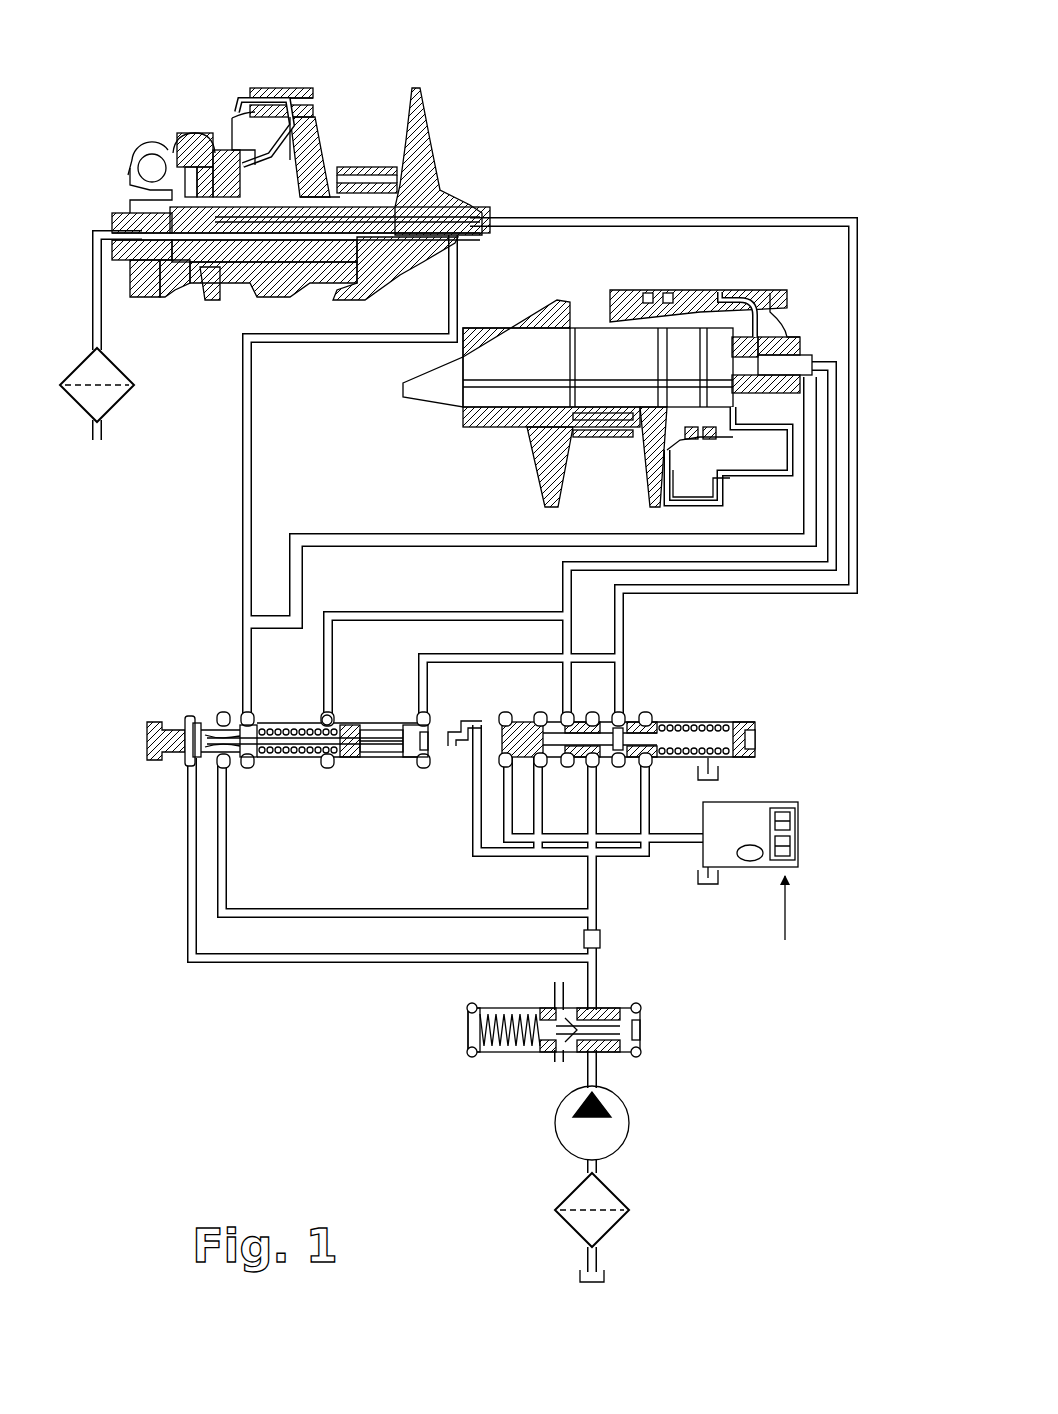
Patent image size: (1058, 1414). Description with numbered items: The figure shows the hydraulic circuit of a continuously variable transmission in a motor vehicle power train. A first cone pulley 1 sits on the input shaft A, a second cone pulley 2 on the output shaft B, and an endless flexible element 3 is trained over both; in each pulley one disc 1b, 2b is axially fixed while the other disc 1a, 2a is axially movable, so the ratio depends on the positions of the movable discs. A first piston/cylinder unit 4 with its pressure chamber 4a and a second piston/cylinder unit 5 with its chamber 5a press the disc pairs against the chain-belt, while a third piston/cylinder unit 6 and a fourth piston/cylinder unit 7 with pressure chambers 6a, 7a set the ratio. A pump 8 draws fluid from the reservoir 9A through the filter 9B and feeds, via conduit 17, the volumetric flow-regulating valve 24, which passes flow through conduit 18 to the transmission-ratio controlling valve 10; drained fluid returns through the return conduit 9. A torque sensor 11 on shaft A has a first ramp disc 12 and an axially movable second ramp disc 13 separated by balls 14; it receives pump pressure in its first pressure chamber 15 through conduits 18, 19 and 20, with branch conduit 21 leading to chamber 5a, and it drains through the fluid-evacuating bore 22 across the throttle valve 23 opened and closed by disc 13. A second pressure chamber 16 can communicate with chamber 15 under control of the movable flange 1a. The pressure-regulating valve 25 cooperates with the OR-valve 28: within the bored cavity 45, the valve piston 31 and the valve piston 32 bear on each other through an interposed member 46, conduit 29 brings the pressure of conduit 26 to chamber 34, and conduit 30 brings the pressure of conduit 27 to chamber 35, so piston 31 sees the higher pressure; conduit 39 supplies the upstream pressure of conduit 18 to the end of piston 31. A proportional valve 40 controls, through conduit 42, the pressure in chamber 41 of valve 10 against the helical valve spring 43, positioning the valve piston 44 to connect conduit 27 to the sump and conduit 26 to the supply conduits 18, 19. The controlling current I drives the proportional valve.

The first cone pulley 1 is at (393, 100).
The axially movable disc 1a is at (316, 117).
The axially fixed disc 1b is at (425, 132).
The second cone pulley 2 is at (503, 440).
The axially movable disc 2a is at (655, 480).
The axially fixed disc 2b is at (560, 437).
The endless flexible element 3 is at (370, 172).
The first piston/cylinder unit 4 is at (300, 170).
The pressure chamber 4a is at (250, 135).
The second piston/cylinder unit 5 is at (728, 476).
The pressure chamber 5a is at (703, 500).
The third piston/cylinder unit 6 is at (268, 120).
The pressure chamber 6a is at (255, 118).
The fourth piston/cylinder unit 7 is at (683, 292).
The pressure chamber 7a is at (740, 308).
The pump 8 is at (610, 1135).
The return conduit 9 is at (476, 842).
The reservoir 9A is at (618, 1230).
The filter 9B is at (598, 1282).
The transmission-ratio controlling valve 10 is at (703, 722).
The torque sensor 11 is at (160, 135).
The first ramp disc 12 is at (142, 165).
The second ramp disc 13 is at (178, 135).
The balls 14 is at (152, 160).
The first pressure chamber 15 is at (192, 167).
The second pressure chamber 16 is at (297, 135).
The conduit 17 is at (598, 1068).
The conduit 18 is at (600, 948).
The conduit 19 is at (318, 910).
The conduit 20 is at (448, 296).
The branch conduit 21 is at (358, 538).
The fluid-evacuating bore 22 is at (138, 292).
The throttle valve 23 is at (166, 292).
The volumetric flow-regulating valve 24 is at (508, 1045).
The pressure-regulating valve 25 is at (183, 714).
The conduit 26 is at (575, 220).
The conduit 27 is at (822, 366).
The OR-valve 28 is at (385, 768).
The conduit 29 is at (420, 660).
The conduit 30 is at (383, 612).
The valve piston 31 is at (222, 738).
The valve piston 32 is at (355, 744).
The pressure chamber 34 is at (424, 752).
The pressure chamber 35 is at (338, 716).
The conduit 39 is at (188, 872).
The proportional valve 40 is at (725, 860).
The chamber 41 is at (506, 722).
The conduit 42 is at (678, 842).
The helical valve spring 43 is at (716, 725).
The valve piston 44 is at (628, 727).
The bored cavity 45 is at (198, 725).
The interposed member 46 is at (592, 899).
The first shaft A is at (112, 212).
The second shaft B is at (510, 345).
The controlling current I is at (849, 942).